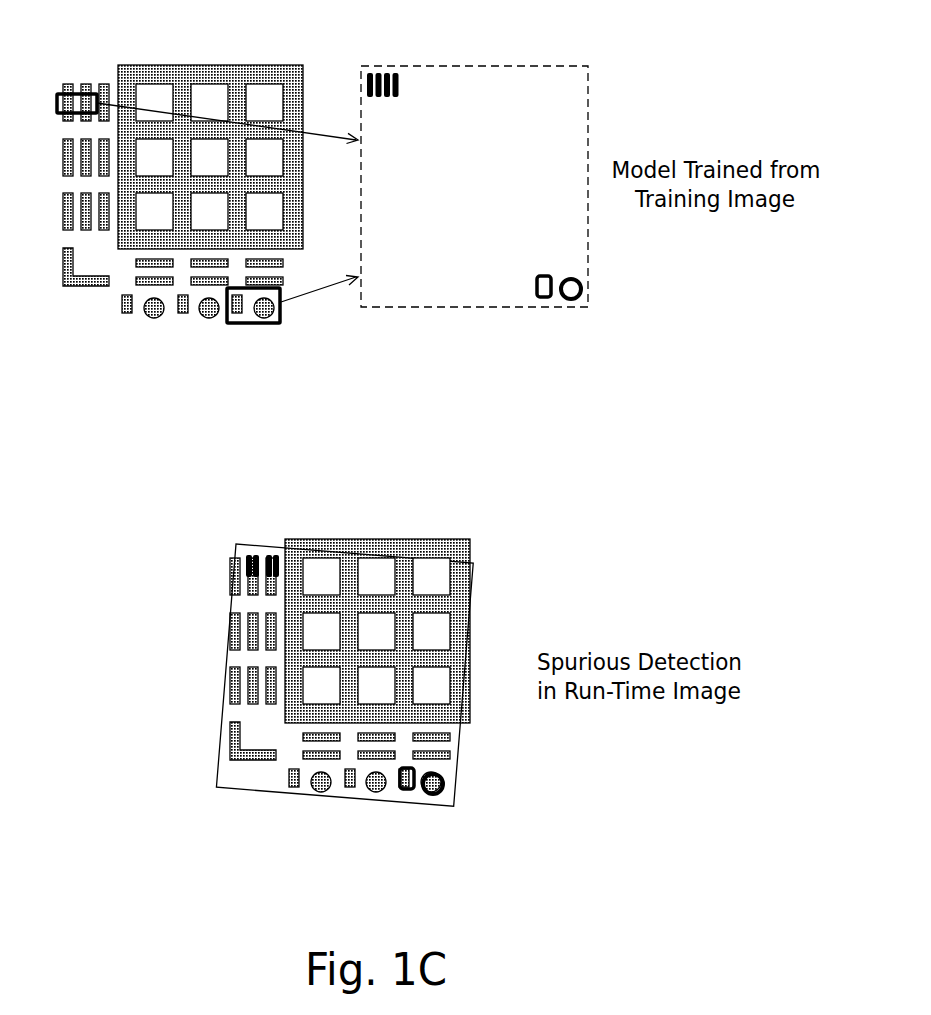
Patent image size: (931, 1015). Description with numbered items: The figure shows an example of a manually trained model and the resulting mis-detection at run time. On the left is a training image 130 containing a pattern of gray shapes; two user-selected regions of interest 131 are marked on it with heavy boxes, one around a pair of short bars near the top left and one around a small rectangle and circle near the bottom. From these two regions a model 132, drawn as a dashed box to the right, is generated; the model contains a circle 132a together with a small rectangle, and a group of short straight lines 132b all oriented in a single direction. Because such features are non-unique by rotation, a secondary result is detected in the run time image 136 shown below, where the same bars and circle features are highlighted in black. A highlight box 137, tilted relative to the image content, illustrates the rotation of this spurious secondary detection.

The training image 130 is at (310, 63).
The user-selected regions of interest 131 is at (58, 113).
The model 132 is at (456, 66).
The circle 132a is at (571, 274).
The short straight lines 132b is at (385, 99).
The run time image 136 is at (405, 826).
The highlight box 137 is at (219, 739).